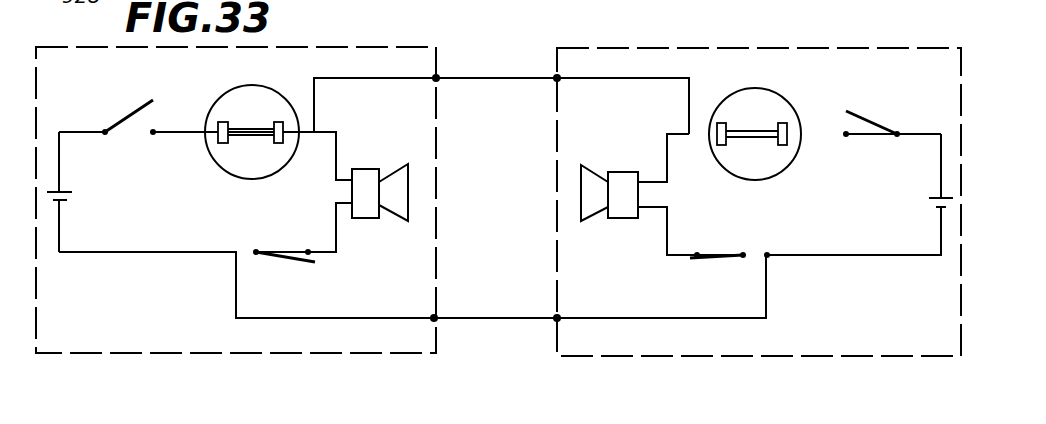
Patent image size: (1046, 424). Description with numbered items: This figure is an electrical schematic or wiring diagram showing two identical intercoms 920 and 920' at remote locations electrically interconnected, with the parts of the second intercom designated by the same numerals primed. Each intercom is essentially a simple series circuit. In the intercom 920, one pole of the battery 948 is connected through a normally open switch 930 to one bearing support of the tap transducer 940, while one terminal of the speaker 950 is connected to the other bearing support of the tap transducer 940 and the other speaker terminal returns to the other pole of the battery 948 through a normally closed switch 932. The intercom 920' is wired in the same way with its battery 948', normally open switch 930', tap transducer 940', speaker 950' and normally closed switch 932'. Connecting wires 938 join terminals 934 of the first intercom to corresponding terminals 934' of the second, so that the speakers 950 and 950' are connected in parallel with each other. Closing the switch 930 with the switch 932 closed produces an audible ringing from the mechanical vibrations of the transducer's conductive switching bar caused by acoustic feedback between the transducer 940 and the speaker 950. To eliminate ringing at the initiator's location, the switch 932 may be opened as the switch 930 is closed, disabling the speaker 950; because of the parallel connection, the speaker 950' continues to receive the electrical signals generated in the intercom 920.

The intercom 920 is at (236, 220).
The intercom 920' is at (759, 220).
The normally open switch 930 is at (109, 101).
The normally open switch 930' is at (885, 103).
The normally closed switch 932 is at (273, 234).
The normally closed switch 932' is at (730, 232).
The terminal 934 is at (458, 198).
The terminal 934' is at (530, 198).
The connecting wire 938 is at (498, 68).
The tap transducer 940 is at (247, 117).
The tap transducer 940' is at (768, 119).
The battery 948 is at (91, 199).
The battery 948' is at (907, 207).
The speaker 950 is at (380, 165).
The speaker 950' is at (611, 172).